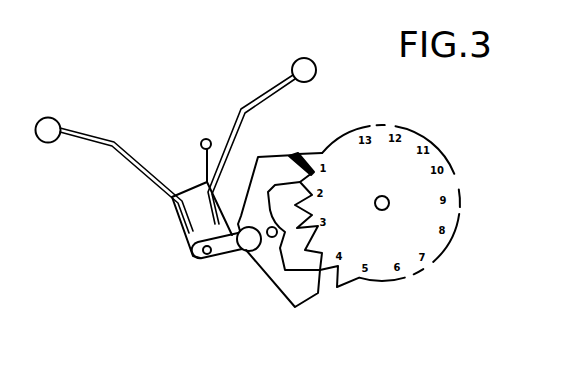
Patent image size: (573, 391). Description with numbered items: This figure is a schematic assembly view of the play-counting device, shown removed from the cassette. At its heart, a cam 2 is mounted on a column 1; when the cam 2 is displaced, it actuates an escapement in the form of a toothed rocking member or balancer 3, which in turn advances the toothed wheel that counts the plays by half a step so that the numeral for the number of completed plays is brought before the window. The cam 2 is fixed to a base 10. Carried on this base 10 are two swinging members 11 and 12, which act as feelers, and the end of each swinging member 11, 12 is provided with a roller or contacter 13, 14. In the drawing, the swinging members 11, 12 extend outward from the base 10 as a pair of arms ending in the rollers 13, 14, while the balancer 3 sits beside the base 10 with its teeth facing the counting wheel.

The column 1 is at (205, 256).
The cam 2 is at (227, 250).
The toothed rocking member or balancer 3 is at (283, 288).
The base 10 is at (197, 212).
The swinging member 11 is at (106, 138).
The swinging member 12 is at (262, 95).
The roller or contacter 13 is at (45, 125).
The roller or contacter 14 is at (311, 64).